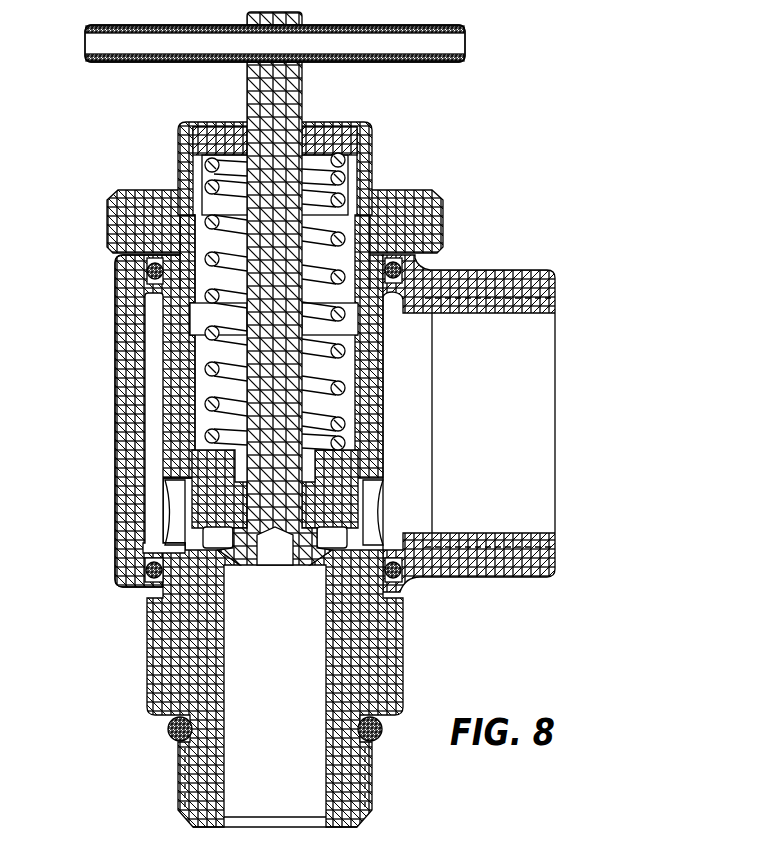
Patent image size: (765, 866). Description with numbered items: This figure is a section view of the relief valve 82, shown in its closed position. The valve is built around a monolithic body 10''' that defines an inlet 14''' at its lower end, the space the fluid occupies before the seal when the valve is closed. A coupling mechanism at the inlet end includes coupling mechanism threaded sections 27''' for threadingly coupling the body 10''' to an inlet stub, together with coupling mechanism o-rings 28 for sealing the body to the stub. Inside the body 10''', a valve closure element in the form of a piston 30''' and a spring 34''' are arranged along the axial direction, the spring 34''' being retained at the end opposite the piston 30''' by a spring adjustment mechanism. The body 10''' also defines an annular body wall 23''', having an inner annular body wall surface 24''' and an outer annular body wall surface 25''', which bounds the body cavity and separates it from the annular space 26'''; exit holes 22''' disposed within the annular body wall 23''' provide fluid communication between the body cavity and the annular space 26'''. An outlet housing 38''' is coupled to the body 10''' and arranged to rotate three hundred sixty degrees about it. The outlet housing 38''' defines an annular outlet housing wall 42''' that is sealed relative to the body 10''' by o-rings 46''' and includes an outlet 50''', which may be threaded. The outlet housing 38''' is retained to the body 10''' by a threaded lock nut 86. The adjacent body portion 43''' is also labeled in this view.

The relief valve 82 is at (572, 176).
The threaded lock nut 86 is at (110, 193).
The spring 34''' is at (319, 206).
The o-rings 46''' is at (332, 390).
The annular space 26''' is at (116, 420).
The valve body upper portion 43''' is at (116, 401).
The annular outlet housing wall 42''' is at (115, 401).
The piston 30''' is at (192, 499).
The exit holes 22''' is at (105, 519).
The body 10''' is at (214, 688).
The coupling mechanism o-rings 28 is at (165, 733).
The coupling mechanism threaded sections 27''' is at (223, 787).
The inlet 14''' is at (335, 794).
The inner annular body wall surface 24''' is at (499, 346).
The annular body wall 23''' is at (513, 415).
The outer annular body wall surface 25''' is at (503, 471).
The outlet 50''' is at (506, 423).
The outlet housing 38''' is at (510, 600).